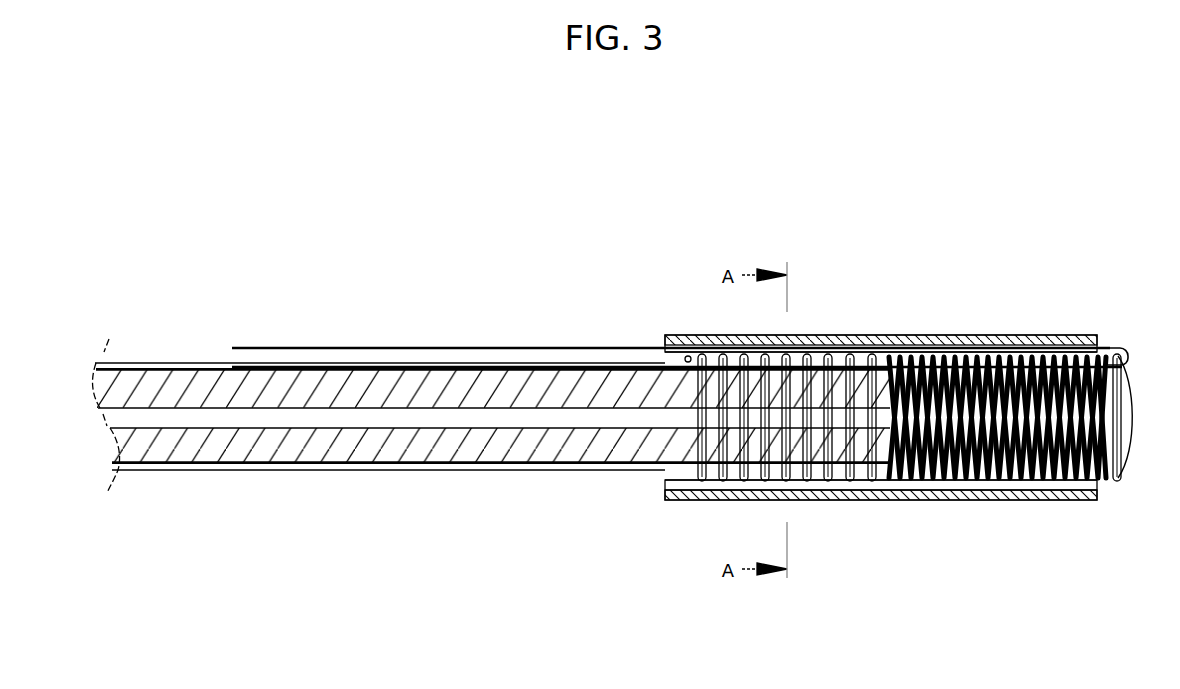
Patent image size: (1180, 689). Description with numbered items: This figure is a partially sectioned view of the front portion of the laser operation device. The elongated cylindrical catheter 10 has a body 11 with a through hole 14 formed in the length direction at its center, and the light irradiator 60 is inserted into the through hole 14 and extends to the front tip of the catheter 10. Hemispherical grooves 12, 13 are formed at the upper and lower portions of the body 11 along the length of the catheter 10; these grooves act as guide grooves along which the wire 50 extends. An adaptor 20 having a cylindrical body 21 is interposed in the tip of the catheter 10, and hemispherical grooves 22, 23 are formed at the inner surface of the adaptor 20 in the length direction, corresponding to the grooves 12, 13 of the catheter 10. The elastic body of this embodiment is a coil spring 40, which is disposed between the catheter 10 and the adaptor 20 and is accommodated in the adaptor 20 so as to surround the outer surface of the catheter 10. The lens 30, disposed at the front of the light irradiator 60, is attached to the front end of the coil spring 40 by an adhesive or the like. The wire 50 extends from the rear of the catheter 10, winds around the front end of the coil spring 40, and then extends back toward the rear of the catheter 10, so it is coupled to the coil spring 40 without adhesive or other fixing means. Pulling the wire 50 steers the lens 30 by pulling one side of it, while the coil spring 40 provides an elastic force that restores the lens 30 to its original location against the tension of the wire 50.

The catheter 10 is at (203, 464).
The body 11 is at (413, 462).
The hemispherical groove 12 is at (154, 363).
The hemispherical groove 13 is at (315, 472).
The through hole 14 is at (506, 425).
The adaptor 20 is at (988, 337).
The cylindrical body 21 is at (1000, 500).
The hemispherical groove 22 is at (890, 342).
The hemispherical groove 23 is at (827, 500).
The lens 30 is at (1128, 460).
The coil spring 40 is at (925, 492).
The wire 50 is at (455, 348).
The light irradiator 60 is at (150, 464).